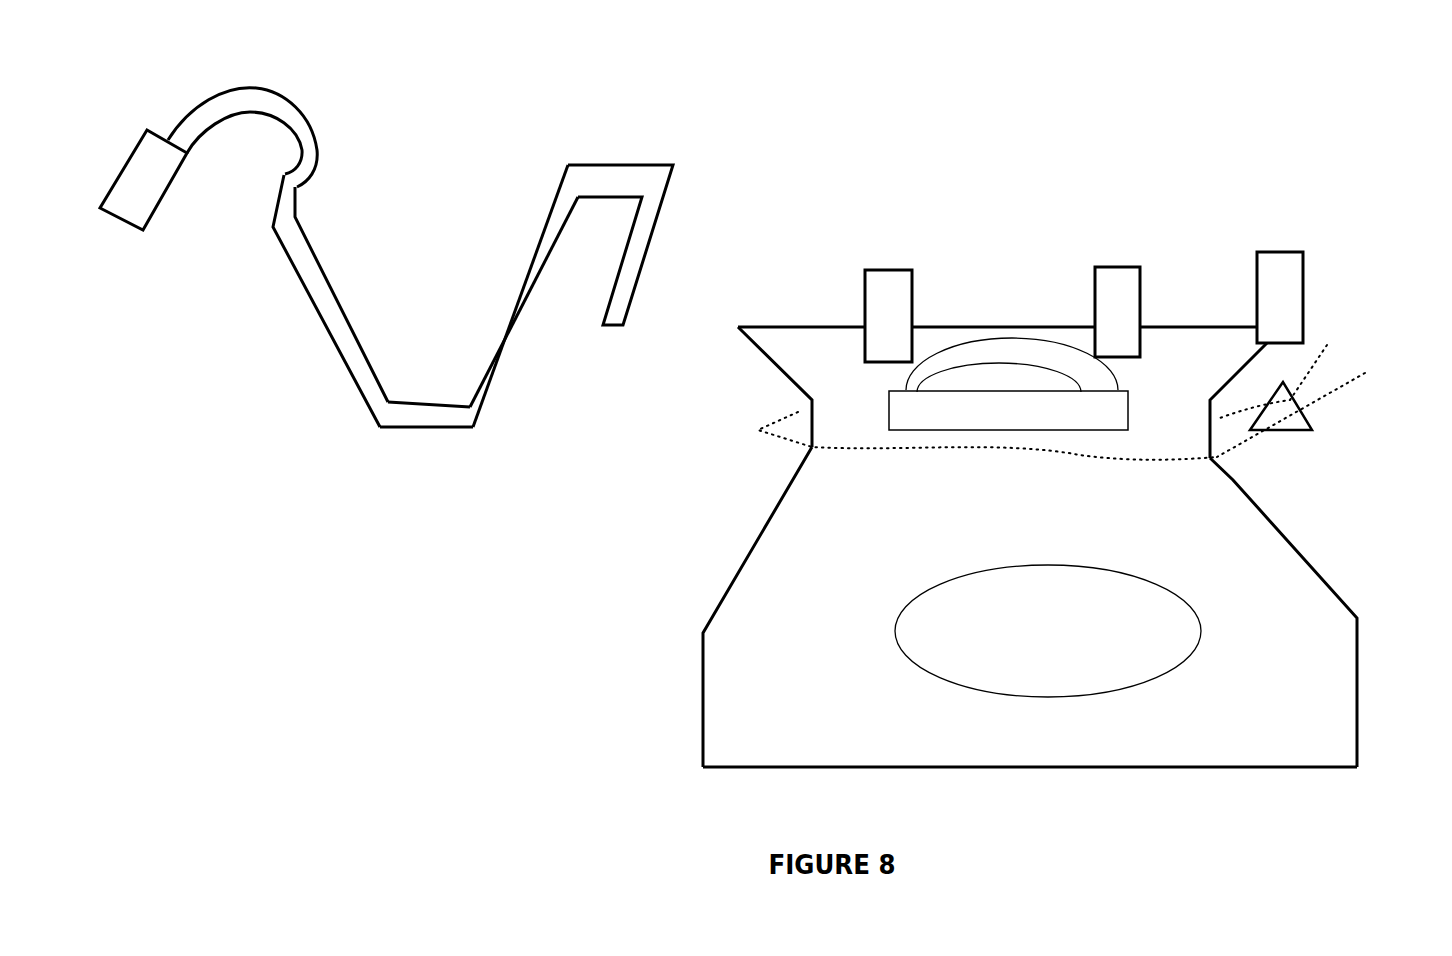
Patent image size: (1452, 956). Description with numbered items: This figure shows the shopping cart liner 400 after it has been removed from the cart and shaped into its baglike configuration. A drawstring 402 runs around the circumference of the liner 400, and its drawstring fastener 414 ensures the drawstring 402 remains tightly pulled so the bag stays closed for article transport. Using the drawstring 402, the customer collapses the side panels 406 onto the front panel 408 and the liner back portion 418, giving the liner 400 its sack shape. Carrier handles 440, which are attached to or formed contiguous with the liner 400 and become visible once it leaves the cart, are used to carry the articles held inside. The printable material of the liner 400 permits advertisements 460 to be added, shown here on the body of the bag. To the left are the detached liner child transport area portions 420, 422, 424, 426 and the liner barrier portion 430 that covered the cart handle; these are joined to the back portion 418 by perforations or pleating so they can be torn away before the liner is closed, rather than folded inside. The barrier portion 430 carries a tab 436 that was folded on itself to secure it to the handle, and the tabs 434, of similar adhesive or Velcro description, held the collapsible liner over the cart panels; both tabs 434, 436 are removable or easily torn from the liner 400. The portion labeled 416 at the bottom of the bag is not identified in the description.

The cart liner 400 is at (828, 120).
The drawstring 402 is at (978, 447).
The side panels 406 is at (828, 510).
The front panel 408 is at (1320, 577).
The drawstring fastener 414 is at (1285, 407).
The housing bottom 416 is at (1012, 770).
The liner back portion 418 is at (748, 552).
The liner child transport area portion 420 is at (645, 247).
The liner child transport area portion 422 is at (530, 265).
The liner child transport area portion 424 is at (433, 432).
The liner child transport area portion 426 is at (337, 347).
The liner barrier portion 430 is at (297, 122).
The tabs 434 is at (143, 230).
The tab 436 is at (1110, 275).
The carrier handles 440 is at (1107, 417).
The advertisements 460 is at (1088, 595).